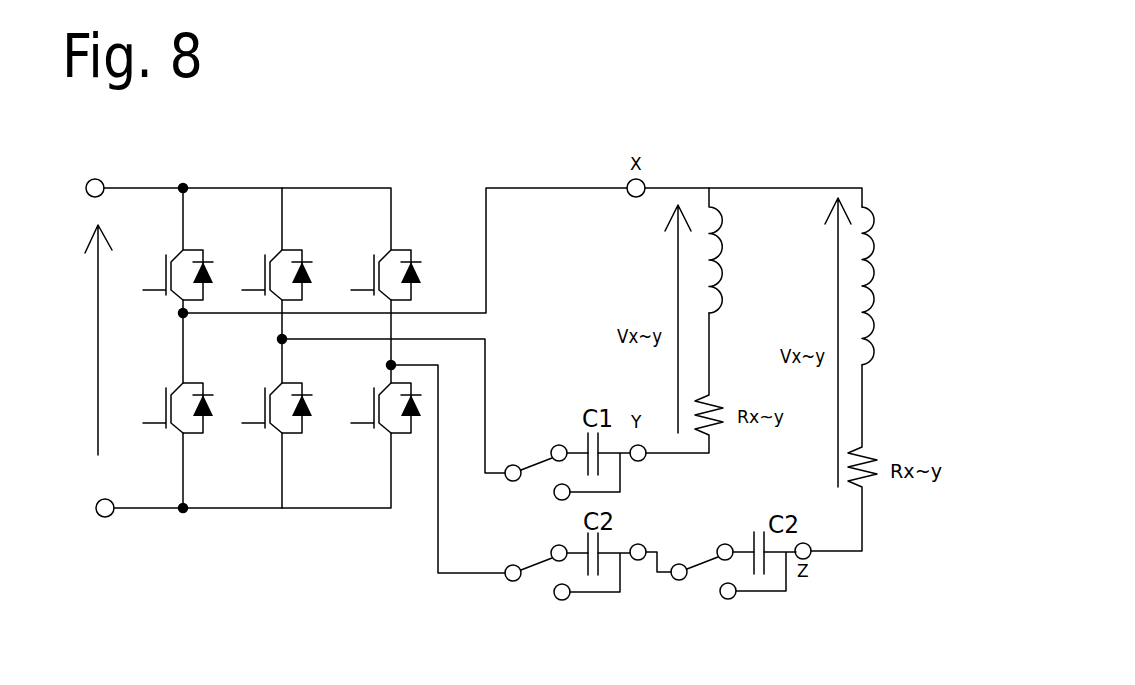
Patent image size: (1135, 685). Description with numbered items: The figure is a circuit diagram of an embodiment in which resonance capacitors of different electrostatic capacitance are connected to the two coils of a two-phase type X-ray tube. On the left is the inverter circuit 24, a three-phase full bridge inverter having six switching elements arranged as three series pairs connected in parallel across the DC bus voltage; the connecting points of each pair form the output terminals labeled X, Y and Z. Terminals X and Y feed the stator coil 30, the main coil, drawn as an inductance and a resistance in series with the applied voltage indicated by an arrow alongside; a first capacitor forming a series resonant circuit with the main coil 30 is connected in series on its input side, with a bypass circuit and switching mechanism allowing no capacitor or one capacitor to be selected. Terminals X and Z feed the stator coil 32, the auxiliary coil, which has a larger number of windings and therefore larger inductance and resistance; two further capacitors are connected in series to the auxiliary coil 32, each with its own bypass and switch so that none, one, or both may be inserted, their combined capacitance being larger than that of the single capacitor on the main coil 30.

The inverter circuit 24 is at (230, 215).
The stator coil 30 is at (722, 208).
The stator coil 32 is at (873, 243).